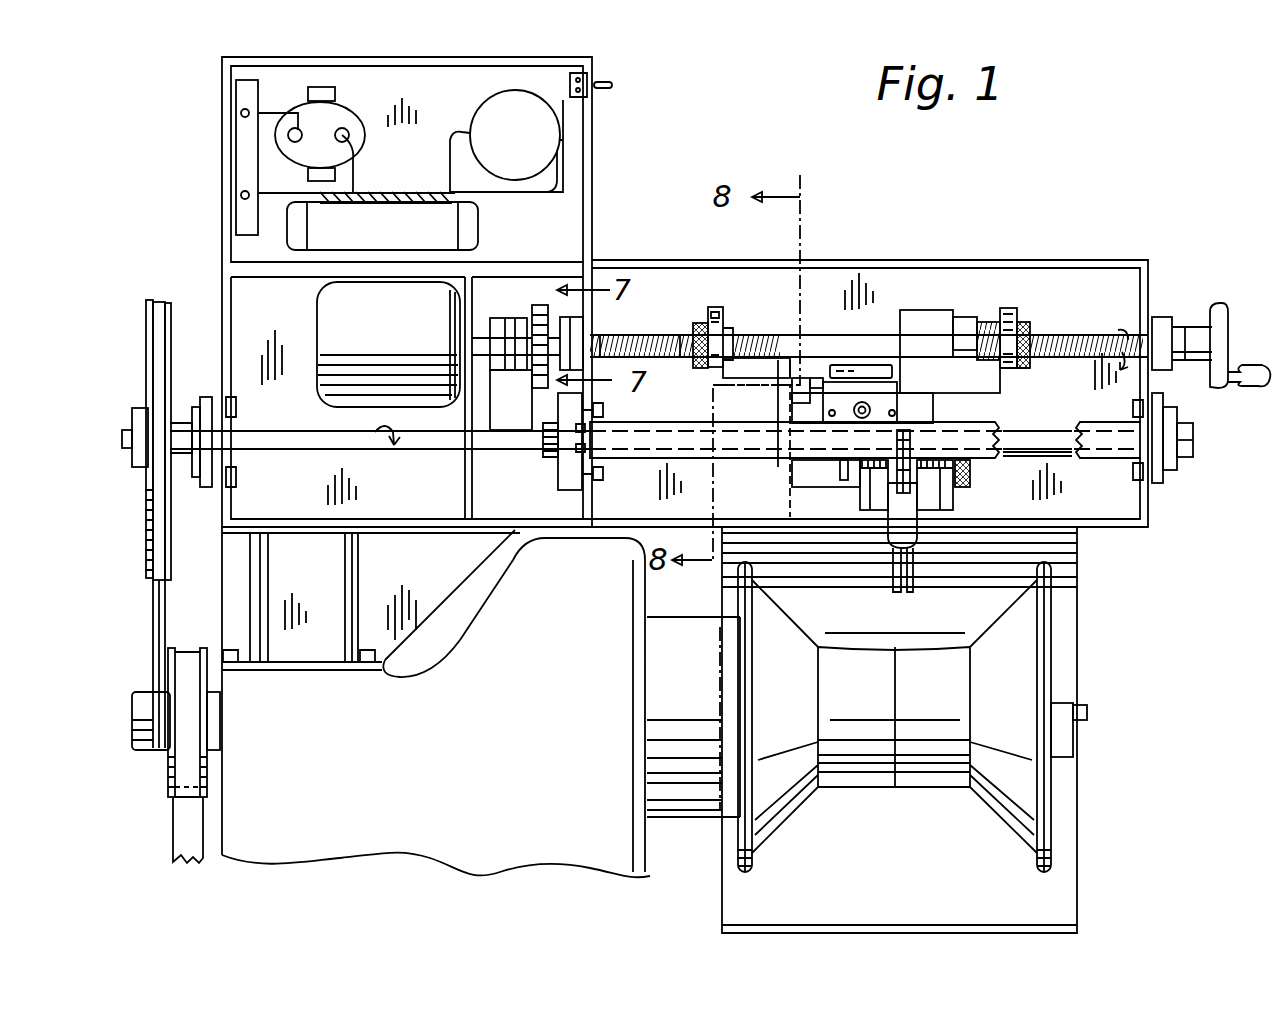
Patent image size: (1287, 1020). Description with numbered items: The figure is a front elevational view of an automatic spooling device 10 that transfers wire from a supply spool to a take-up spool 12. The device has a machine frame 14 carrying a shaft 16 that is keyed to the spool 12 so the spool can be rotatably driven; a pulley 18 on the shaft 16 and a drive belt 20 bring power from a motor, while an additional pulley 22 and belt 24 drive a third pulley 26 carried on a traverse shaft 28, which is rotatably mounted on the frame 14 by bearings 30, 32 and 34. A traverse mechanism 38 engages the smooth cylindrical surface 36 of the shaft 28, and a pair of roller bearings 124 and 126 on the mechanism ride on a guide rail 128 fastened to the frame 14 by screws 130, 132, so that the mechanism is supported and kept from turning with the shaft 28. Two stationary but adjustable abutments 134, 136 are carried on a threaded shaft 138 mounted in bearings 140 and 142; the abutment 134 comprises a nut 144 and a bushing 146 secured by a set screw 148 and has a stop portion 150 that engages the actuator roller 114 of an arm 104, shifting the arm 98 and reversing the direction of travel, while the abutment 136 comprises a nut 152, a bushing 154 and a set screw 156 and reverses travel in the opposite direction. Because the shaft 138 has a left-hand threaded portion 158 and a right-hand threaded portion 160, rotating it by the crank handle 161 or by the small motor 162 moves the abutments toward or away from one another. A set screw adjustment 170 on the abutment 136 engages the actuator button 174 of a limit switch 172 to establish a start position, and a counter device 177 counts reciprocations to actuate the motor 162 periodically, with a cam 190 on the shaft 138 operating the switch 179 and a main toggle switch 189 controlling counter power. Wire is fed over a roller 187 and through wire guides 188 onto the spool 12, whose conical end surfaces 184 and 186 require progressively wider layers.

The spooling device 10 is at (1142, 203).
The take-up spool 12 is at (920, 778).
The machine frame 14 is at (1118, 529).
The shaft 16 is at (1078, 712).
The pulley 18 is at (168, 781).
The drive belt 20 is at (185, 830).
The additional pulley 22 is at (138, 703).
The belt 24 is at (158, 620).
The third pulley 26 is at (146, 348).
The traverse shaft 28 is at (298, 436).
The bearing 30 is at (212, 403).
The bearing 32 is at (557, 477).
The bearing 34 is at (1180, 458).
The smooth cylindrical surface 36 is at (1030, 453).
The traverse mechanism 38 is at (778, 484).
The arm 98 is at (866, 365).
The arm 104 is at (805, 377).
The actuator roller 114 is at (822, 378).
The roller bearing 124 is at (848, 410).
The roller bearing 126 is at (850, 484).
The guide rail 128 is at (700, 425).
The screw 130 is at (578, 448).
The screw 132 is at (1155, 450).
The abutment 134 is at (771, 394).
The abutment 136 is at (989, 393).
The threaded shaft 138 is at (1085, 323).
The bearing 140 is at (583, 325).
The bearing 142 is at (1160, 318).
The nut 144 is at (700, 321).
The bushing 146 is at (720, 368).
The set screw 148 is at (722, 312).
The stop portion 150 is at (783, 378).
The nut 152 is at (1028, 330).
The bushing 154 is at (1012, 370).
The set screw 156 is at (1012, 312).
The left-hand threaded portion 158 is at (1097, 348).
The right-hand threaded portion 160 is at (674, 339).
The crank handle 161 is at (1225, 347).
The motor 162 is at (333, 303).
The set screw adjustment 170 is at (990, 322).
The limit switch 172 is at (912, 310).
The actuator button 174 is at (968, 318).
The counter device 177 is at (488, 112).
The switch 179 is at (503, 417).
The conical end surface 184 is at (790, 814).
The conical end surface 186 is at (1010, 831).
The roller 187 is at (904, 452).
The wire guides 188 is at (924, 587).
The main toggle switch 189 is at (605, 90).
The cam 190 is at (540, 300).